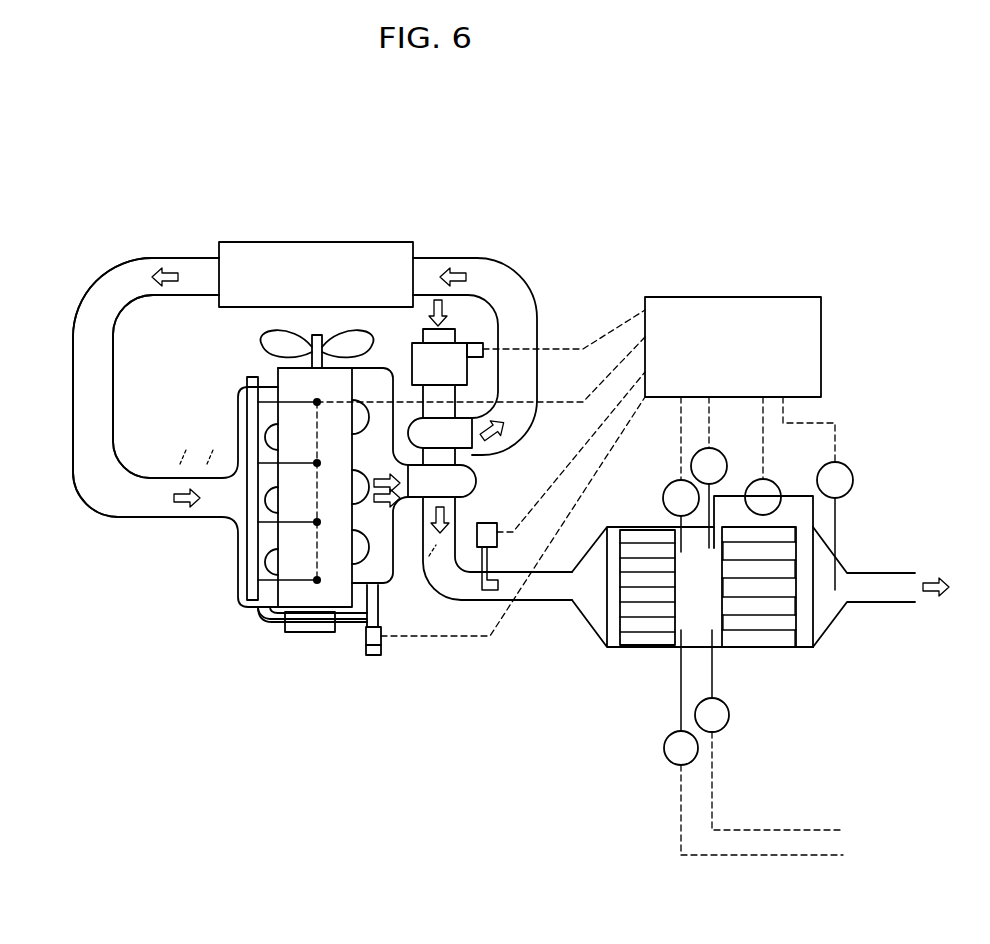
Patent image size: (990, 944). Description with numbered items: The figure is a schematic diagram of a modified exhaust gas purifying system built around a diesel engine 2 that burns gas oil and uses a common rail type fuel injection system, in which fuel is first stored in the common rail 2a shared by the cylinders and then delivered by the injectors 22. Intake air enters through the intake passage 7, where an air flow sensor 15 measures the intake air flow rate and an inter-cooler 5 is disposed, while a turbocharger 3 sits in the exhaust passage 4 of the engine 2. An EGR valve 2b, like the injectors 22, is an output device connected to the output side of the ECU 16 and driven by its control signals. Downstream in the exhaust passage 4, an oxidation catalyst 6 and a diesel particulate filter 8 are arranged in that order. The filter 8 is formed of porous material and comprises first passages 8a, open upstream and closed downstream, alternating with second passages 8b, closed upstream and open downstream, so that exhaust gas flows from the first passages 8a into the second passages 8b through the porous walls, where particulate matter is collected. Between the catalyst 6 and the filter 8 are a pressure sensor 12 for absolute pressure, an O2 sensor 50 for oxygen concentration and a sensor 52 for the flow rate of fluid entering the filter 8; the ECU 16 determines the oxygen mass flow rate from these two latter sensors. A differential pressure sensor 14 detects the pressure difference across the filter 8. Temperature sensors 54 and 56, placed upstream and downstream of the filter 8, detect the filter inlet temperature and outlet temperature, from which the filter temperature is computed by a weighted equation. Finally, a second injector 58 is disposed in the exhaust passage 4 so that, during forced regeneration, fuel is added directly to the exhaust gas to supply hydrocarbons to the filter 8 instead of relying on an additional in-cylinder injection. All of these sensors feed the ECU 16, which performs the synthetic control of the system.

The engine 2 is at (222, 622).
The common rail 2a is at (247, 575).
The EGR valve 2b is at (373, 655).
The turbocharger 3 is at (468, 464).
The exhaust passage 4 is at (527, 602).
The inter-cooler 5 is at (292, 242).
The oxidation catalyst 6 is at (638, 652).
The intake passage 7 is at (93, 290).
The diesel particulate filter 8 is at (757, 655).
The first passages 8a is at (733, 538).
The second passages 8b is at (787, 623).
The pressure sensor 12 is at (720, 455).
The differential pressure sensor 14 is at (777, 483).
The air flow sensor 15 is at (473, 340).
The ECU 16 is at (728, 297).
The injector 22 is at (317, 402).
The O2 sensor 50 is at (665, 757).
The flow rate sensor 52 is at (722, 728).
The temperature sensor 54 is at (668, 487).
The temperature sensor 56 is at (849, 469).
The second injector 58 is at (483, 523).